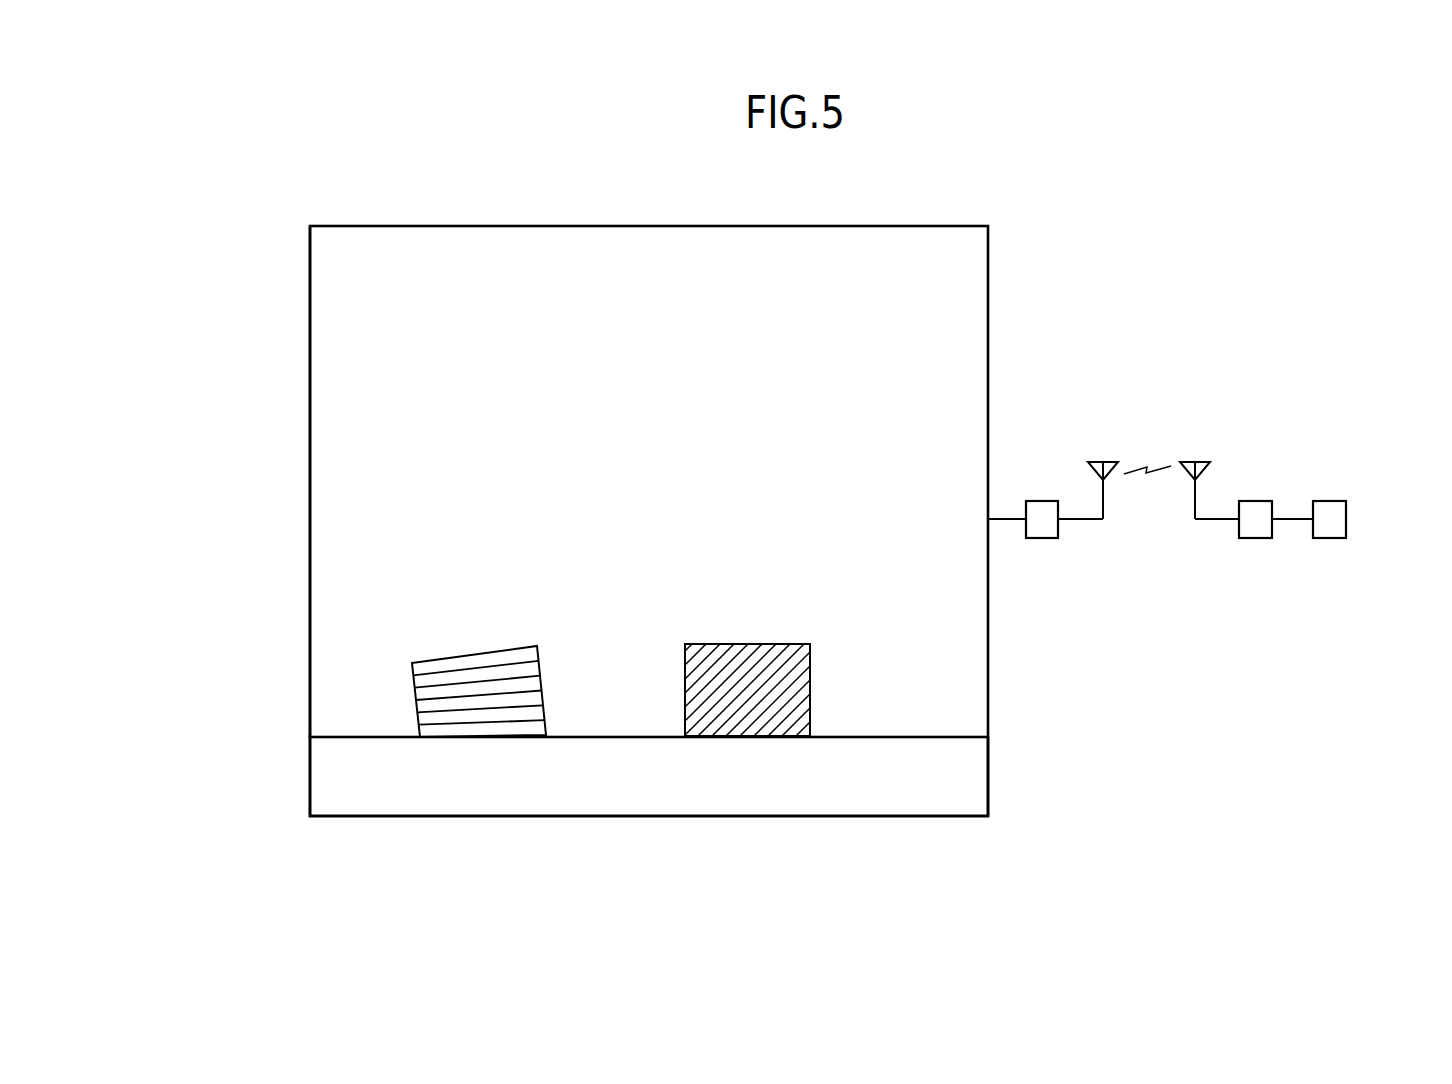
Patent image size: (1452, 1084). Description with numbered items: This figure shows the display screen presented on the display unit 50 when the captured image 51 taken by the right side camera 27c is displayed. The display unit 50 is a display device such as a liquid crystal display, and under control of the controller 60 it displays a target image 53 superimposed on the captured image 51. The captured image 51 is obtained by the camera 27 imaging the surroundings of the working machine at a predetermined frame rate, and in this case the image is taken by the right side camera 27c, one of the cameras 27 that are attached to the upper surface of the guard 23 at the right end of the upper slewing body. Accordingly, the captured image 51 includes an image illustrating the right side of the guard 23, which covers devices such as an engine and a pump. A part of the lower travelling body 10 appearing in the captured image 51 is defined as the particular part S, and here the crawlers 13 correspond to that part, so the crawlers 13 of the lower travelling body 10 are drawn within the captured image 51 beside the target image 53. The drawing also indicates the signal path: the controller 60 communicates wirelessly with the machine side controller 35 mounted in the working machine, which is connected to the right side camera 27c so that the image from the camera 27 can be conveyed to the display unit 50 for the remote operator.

The display unit 50 is at (295, 215).
The captured image 51 is at (318, 579).
The guard 23 is at (322, 773).
The lower travelling body 10 is at (345, 684).
The crawlers 13 is at (443, 669).
The target image 53 is at (746, 737).
The controller 60 is at (1046, 500).
The machine side controller 35 is at (1254, 500).
The right side camera 27c is at (1329, 500).
The camera 27 is at (1347, 496).